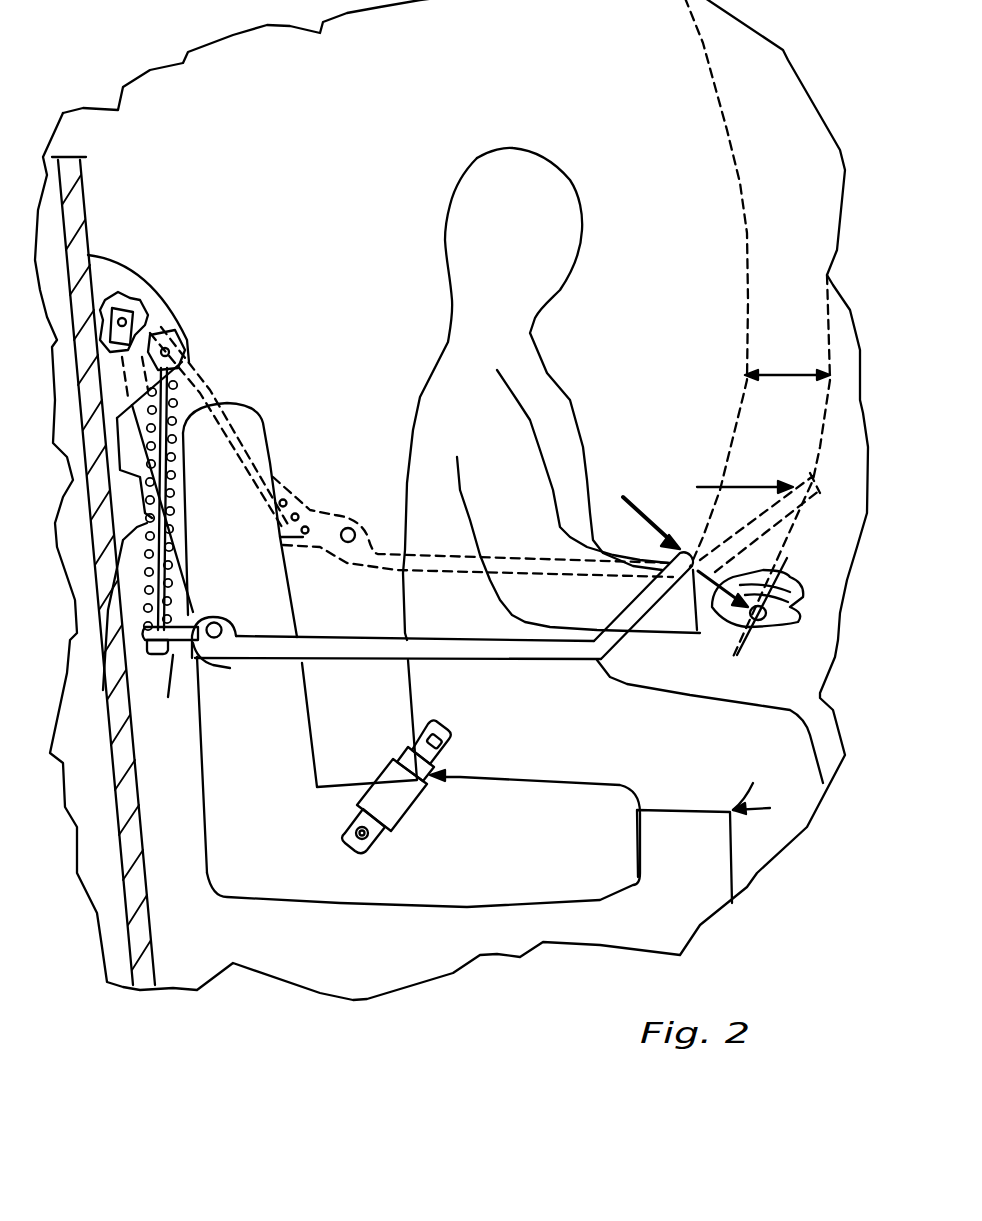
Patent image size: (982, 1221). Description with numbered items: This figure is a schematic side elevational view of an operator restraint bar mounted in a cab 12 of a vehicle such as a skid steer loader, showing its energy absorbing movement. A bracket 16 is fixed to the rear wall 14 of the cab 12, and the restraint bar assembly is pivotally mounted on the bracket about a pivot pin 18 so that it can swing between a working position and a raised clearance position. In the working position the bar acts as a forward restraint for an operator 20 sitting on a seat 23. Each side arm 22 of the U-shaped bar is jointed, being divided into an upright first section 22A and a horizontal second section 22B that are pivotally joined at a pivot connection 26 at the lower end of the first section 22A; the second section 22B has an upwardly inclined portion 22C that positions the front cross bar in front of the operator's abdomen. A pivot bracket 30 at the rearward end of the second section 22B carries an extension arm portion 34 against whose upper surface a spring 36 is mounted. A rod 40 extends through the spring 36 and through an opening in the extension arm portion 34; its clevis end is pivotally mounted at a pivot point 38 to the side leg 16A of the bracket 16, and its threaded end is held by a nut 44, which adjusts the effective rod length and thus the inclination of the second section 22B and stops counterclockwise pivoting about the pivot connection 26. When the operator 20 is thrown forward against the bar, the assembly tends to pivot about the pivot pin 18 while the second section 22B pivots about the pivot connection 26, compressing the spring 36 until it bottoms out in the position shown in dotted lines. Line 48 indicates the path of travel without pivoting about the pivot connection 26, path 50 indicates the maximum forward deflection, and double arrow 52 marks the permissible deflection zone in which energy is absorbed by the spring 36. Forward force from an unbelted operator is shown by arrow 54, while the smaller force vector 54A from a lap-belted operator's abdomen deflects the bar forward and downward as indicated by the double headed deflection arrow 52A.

The cab 12 is at (527, 930).
The rear wall 14 is at (137, 913).
The bracket 16 is at (252, 496).
The bracket leg 16A is at (160, 310).
The pivot pin 18 is at (125, 310).
The operator 20 is at (540, 377).
The side arm 22 is at (518, 598).
The first side arm section 22A is at (175, 557).
The second side arm section 22B is at (437, 662).
The upwardly inclined portion 22C is at (613, 647).
The seat 23 is at (610, 883).
The pivot connection 26 is at (348, 527).
The pivot bracket 30 is at (205, 665).
The extension arm portion 34 is at (178, 764).
The spring 36 is at (168, 610).
The pivot point 38 is at (173, 353).
The rod 40 is at (172, 510).
The nut 44 is at (143, 654).
The path of travel line 48 is at (748, 232).
The maximum deflection path 50 is at (812, 437).
The double arrow 52 is at (783, 372).
The double headed deflection arrow 52A is at (745, 630).
The forward force arrow 54 is at (758, 487).
The seatbelted operator force vector 54A is at (660, 503).